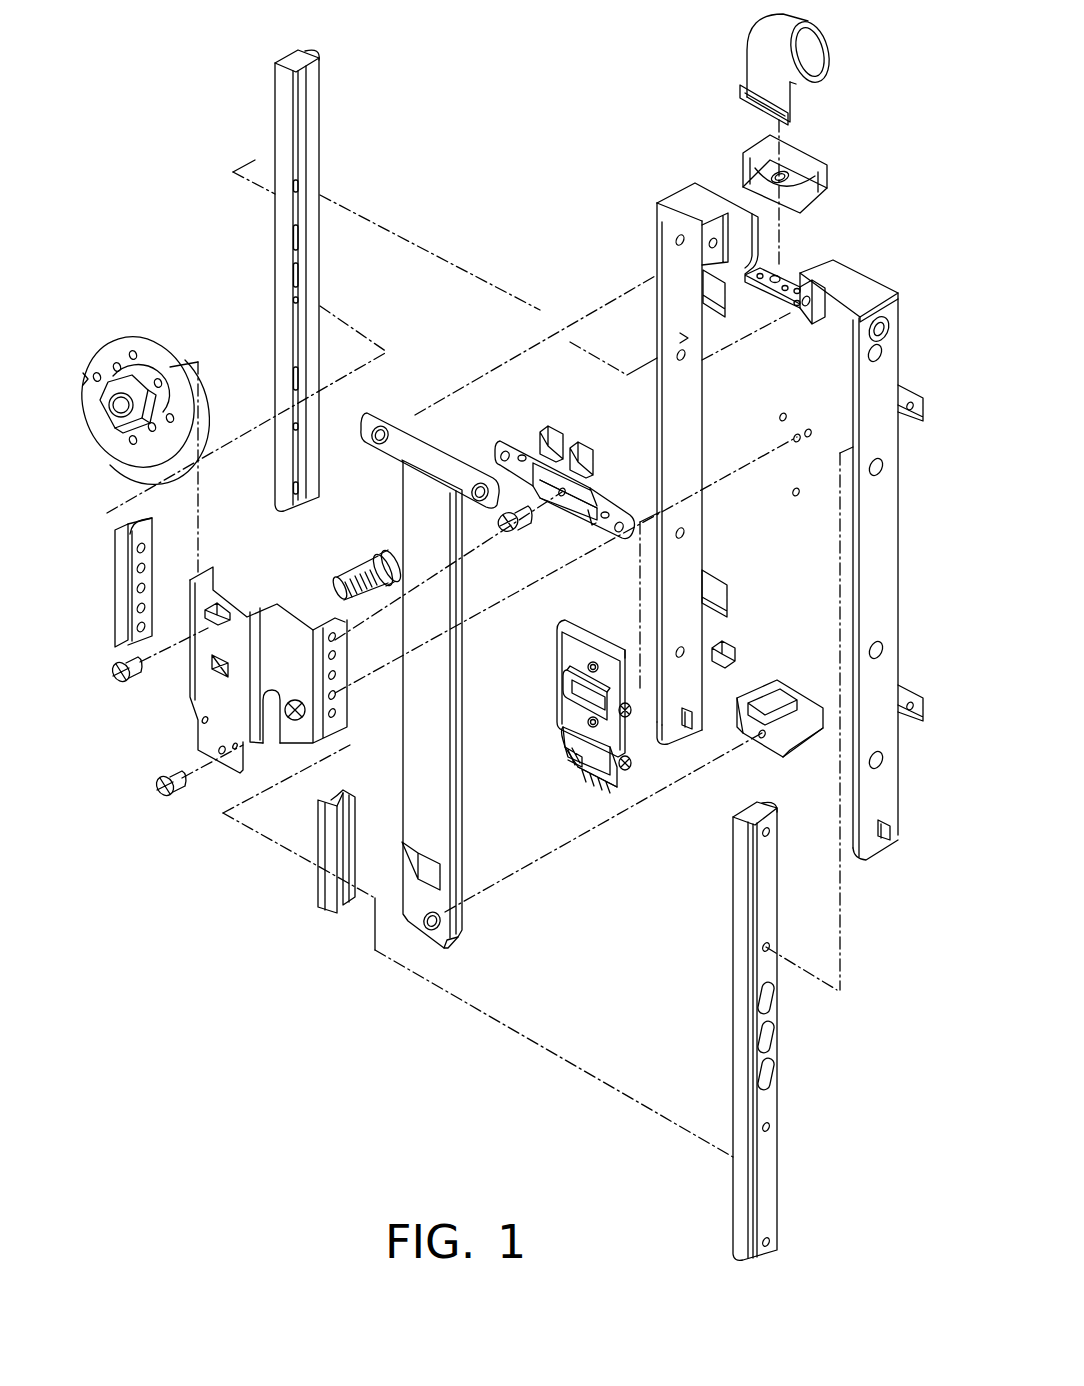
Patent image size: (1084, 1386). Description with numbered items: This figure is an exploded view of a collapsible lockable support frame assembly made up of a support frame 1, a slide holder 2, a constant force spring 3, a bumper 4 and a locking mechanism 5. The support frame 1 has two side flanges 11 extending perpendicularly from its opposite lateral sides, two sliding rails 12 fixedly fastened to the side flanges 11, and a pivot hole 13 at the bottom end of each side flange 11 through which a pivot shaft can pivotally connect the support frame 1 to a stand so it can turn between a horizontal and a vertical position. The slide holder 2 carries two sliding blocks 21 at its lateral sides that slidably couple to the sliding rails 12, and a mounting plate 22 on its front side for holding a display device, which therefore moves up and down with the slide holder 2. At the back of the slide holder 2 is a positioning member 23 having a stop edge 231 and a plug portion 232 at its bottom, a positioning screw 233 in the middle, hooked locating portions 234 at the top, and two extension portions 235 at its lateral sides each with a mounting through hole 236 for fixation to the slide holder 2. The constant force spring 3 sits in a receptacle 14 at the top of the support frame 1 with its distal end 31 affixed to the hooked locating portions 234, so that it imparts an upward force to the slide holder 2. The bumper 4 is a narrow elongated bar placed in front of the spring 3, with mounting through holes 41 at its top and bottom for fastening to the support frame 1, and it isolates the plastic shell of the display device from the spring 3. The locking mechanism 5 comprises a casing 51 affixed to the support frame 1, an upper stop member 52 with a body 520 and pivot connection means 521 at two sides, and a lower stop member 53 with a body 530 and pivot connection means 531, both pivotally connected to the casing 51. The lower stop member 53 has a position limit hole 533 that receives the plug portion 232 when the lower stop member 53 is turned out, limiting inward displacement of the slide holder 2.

The support frame 1 is at (769, 536).
The side flanges 11 is at (672, 250).
The sliding rails 12 is at (307, 145).
The pivot hole 13 is at (687, 730).
The receptacle 14 is at (797, 168).
The slide holder 2 is at (202, 697).
The sliding blocks 21 is at (150, 535).
The mounting plate 22 is at (145, 370).
The positioning member 23 is at (553, 504).
The stop edge 231 is at (560, 513).
The plug portion 232 is at (580, 527).
The positioning screw 233 is at (503, 531).
The hooked locating portions 234 is at (597, 468).
The extension portions 235 is at (520, 456).
The mounting through hole 236 is at (503, 456).
The constant force spring 3 is at (775, 72).
The distal end 31 is at (753, 100).
The bumper 4 is at (427, 684).
The mounting through holes 41 is at (375, 443).
The locking mechanism 5 is at (570, 745).
The casing 51 is at (588, 643).
The upper stop member 52 is at (553, 670).
The body 520 is at (585, 700).
The pivot connection means 521 is at (565, 683).
The lower stop member 53 is at (559, 773).
The body 530 is at (564, 787).
The pivot connection means 531 is at (577, 738).
The position limit hole 533 is at (580, 763).